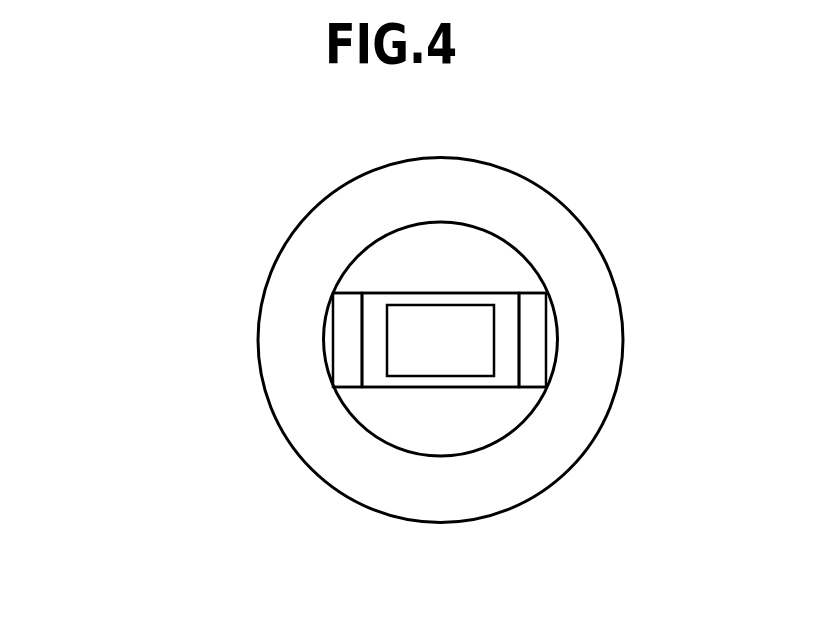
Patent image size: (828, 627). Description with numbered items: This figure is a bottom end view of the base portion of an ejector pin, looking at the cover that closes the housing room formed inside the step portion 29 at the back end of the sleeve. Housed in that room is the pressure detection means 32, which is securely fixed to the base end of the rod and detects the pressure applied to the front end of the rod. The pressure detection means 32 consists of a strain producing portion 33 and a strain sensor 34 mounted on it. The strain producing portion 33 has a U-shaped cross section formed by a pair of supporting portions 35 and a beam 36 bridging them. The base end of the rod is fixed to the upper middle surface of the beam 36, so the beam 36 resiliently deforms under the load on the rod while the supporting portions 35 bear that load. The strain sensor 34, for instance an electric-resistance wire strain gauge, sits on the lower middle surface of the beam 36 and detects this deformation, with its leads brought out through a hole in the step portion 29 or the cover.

The step portion 29 is at (588, 267).
The pressure detection means 32 is at (120, 265).
The strain producing portion 33 is at (185, 242).
The strain sensor 34 is at (433, 362).
The supporting portions 35 is at (342, 323).
The beam 36 is at (376, 312).